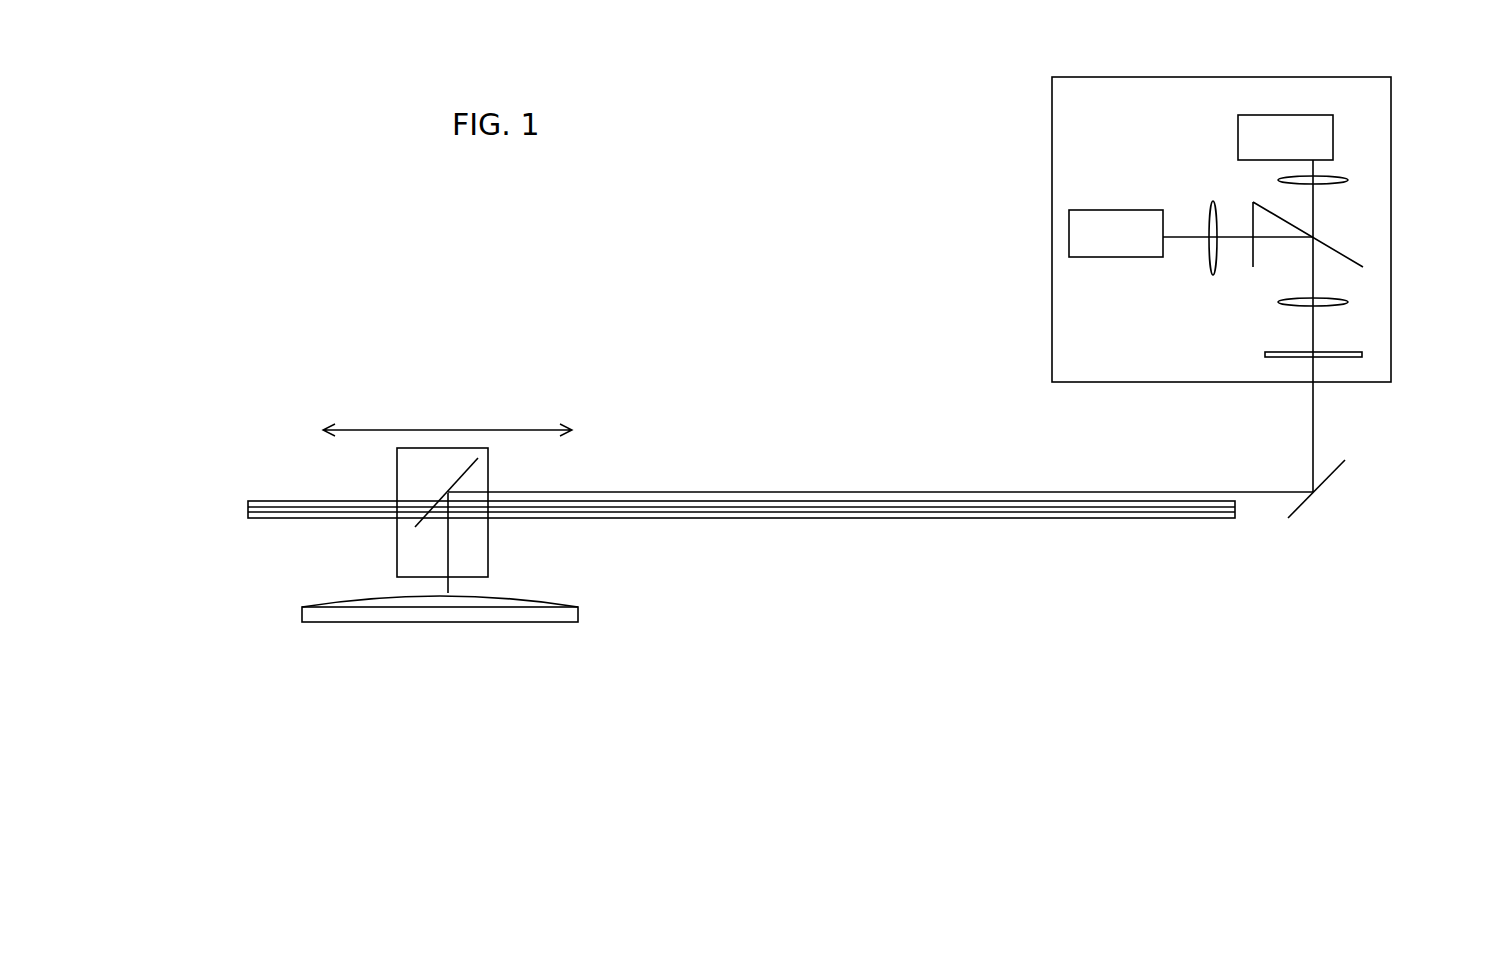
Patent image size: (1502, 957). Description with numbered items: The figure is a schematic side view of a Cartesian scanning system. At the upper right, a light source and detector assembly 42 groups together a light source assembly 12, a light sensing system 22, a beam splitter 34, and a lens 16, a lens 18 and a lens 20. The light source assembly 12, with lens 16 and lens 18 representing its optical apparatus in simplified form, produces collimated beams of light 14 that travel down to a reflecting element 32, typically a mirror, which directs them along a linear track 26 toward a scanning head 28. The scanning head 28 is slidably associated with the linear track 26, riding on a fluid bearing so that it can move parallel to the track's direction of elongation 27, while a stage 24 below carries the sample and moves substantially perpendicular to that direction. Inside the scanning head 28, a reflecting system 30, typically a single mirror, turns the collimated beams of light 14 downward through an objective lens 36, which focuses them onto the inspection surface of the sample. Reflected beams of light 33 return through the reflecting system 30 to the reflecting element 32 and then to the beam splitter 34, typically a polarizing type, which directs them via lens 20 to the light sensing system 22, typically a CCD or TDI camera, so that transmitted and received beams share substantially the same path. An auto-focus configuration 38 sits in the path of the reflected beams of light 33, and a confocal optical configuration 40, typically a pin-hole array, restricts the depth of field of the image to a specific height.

The light source assembly 12 is at (1240, 138).
The collimated beams of light 14 is at (1313, 218).
The lens 16 is at (1330, 185).
The lens 18 is at (1265, 437).
The lens 20 is at (1210, 253).
The light sensing system 22 is at (1078, 248).
The stage 24 is at (553, 613).
The linear track 26 is at (1093, 518).
The direction of elongation 27 is at (428, 430).
The scanning head 28 is at (410, 462).
The reflecting system 30 is at (477, 463).
The reflecting element 32 is at (1302, 506).
The reflected beams of light 33 is at (1232, 238).
The beam splitter 34 is at (1270, 213).
The objective lens 36 is at (445, 568).
The auto-focus configuration 38 is at (1333, 352).
The confocal optical configuration 40 is at (1253, 258).
The light source and detector assembly 42 is at (1108, 107).